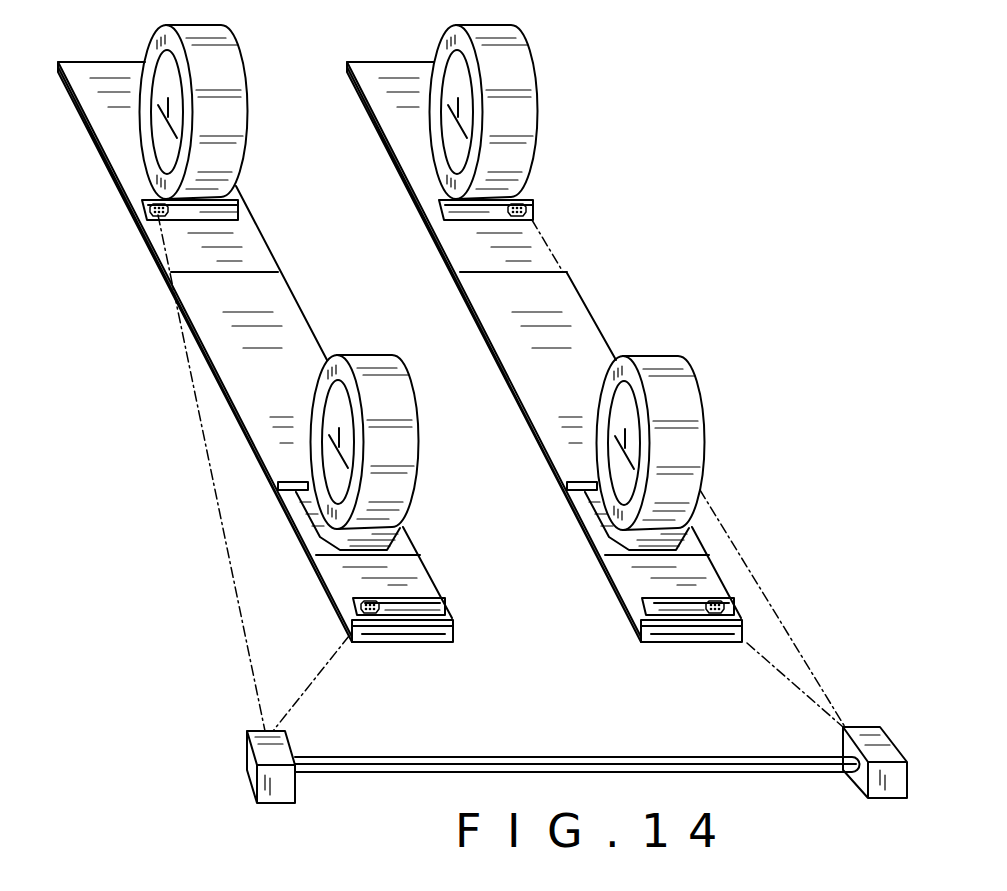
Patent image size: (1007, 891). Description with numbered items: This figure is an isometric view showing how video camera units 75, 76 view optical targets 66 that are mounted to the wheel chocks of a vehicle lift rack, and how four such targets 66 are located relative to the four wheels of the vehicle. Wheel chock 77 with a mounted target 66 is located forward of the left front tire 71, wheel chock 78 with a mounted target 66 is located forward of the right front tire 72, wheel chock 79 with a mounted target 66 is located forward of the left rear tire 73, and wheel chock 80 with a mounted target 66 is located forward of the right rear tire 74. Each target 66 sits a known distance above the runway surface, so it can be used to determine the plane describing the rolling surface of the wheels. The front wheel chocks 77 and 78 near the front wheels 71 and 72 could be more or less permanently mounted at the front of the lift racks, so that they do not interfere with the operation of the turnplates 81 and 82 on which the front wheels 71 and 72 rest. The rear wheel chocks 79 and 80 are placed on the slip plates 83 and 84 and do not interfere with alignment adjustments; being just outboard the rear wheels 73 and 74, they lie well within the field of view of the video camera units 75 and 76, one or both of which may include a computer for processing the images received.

The target 66 is at (150, 212).
The left front tire 71 is at (679, 443).
The right front tire 72 is at (393, 467).
The left rear tire 73 is at (512, 112).
The right rear tire 74 is at (232, 157).
The video camera unit 75 is at (866, 775).
The video camera unit 76 is at (267, 750).
The wheel chock 77 is at (641, 588).
The wheel chock 78 is at (448, 606).
The wheel chock 79 is at (444, 194).
The wheel chock 80 is at (239, 213).
The turnplate 81 is at (601, 516).
The turnplate 82 is at (402, 538).
The slip plate 83 is at (468, 252).
The slip plate 84 is at (248, 258).